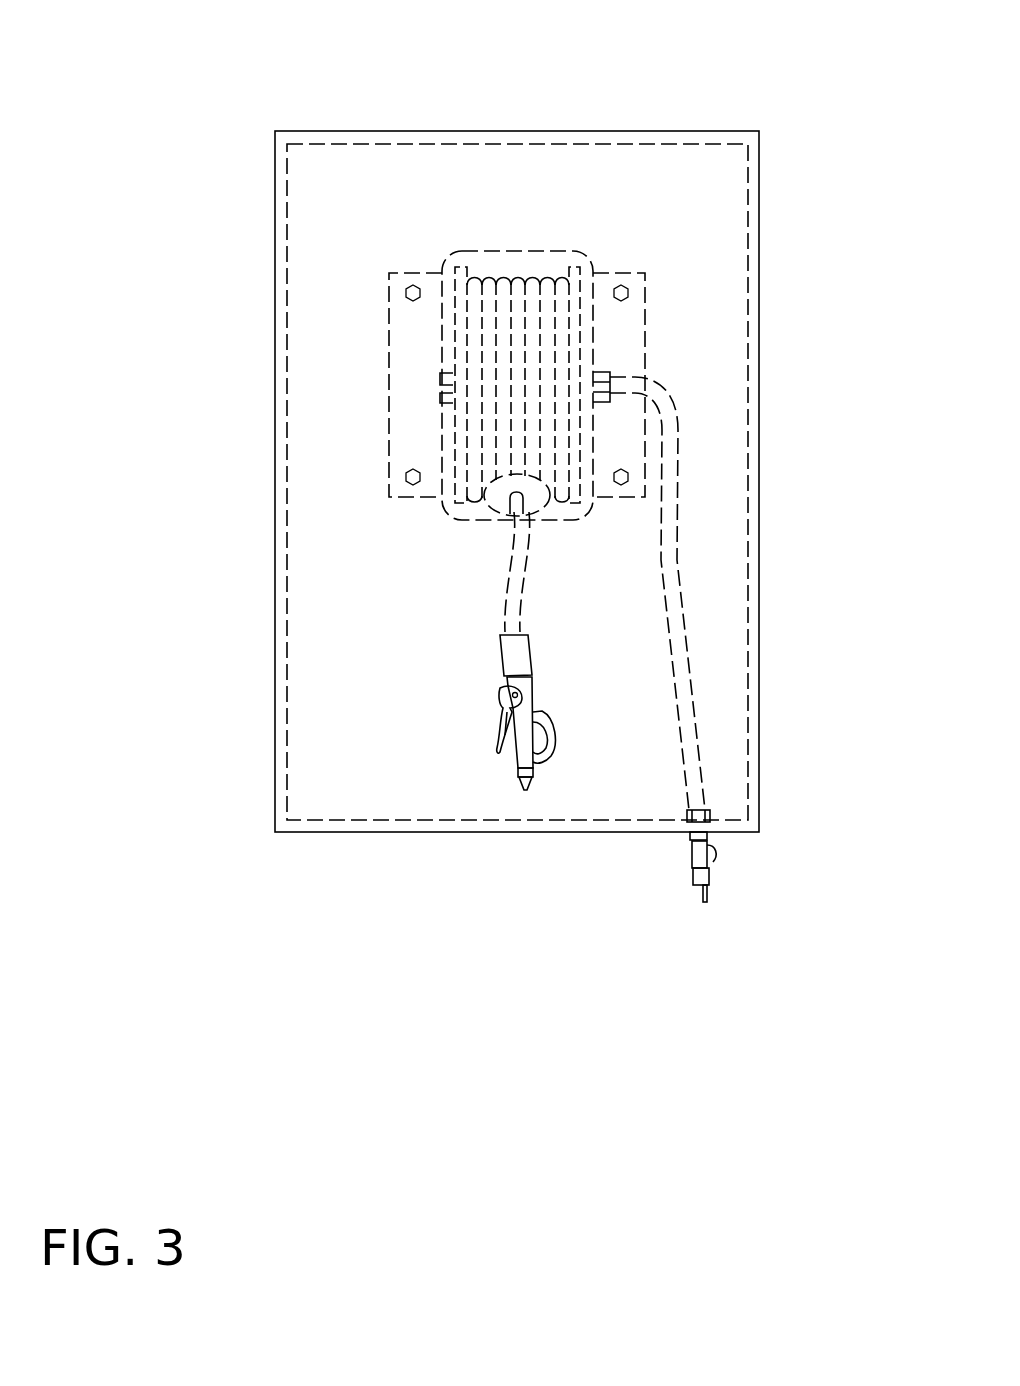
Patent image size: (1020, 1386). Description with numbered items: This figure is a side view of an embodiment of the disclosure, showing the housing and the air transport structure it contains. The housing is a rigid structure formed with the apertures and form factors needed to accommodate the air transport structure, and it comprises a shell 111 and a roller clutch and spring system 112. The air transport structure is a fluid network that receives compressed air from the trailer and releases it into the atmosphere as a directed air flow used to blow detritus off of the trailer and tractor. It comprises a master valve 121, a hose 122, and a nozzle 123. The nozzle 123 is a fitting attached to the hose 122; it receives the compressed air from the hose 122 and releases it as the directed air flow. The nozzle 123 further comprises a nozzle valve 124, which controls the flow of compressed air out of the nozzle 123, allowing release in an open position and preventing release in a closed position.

The shell 111 is at (759, 575).
The roller clutch and spring system 112 is at (618, 325).
The master valve 121 is at (717, 862).
The hose 122 is at (502, 300).
The nozzle 123 is at (529, 717).
The nozzle valve 124 is at (488, 732).